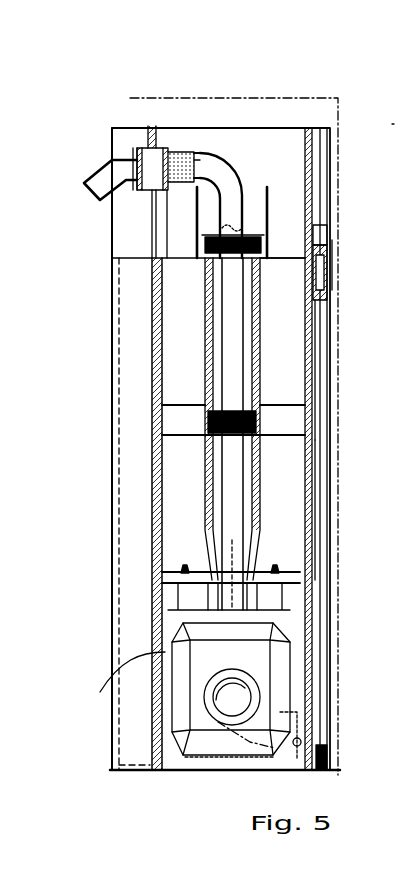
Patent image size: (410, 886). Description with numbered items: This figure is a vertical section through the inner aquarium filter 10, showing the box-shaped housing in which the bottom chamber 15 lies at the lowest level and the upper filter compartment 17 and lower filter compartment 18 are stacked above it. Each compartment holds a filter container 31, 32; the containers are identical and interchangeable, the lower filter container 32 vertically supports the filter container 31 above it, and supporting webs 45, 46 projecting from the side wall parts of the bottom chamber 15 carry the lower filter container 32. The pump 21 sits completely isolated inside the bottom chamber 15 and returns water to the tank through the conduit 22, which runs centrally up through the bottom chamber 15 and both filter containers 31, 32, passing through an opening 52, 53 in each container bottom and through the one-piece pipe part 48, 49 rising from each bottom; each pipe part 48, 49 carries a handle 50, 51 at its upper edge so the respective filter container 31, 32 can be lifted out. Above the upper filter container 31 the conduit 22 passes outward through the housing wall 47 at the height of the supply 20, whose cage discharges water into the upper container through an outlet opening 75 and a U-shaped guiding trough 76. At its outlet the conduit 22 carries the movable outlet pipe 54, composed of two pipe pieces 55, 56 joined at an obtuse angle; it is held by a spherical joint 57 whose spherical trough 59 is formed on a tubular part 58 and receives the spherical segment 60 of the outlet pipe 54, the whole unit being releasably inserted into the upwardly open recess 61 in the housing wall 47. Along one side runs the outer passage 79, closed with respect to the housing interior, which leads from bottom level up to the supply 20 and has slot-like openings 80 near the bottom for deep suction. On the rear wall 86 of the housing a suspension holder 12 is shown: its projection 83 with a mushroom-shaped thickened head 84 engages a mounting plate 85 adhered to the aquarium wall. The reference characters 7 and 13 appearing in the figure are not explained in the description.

The apparatus 7 is at (400, 128).
The filter 10 is at (322, 112).
The suspending holder 12 is at (340, 263).
The guide rail 13 is at (330, 360).
The bottom chamber 15 is at (290, 603).
The upper filter compartment 17 is at (297, 250).
The lower filter compartment 18 is at (296, 430).
The supply 20 is at (250, 150).
The pump 21 is at (200, 728).
The conduit 22 is at (237, 157).
The filter container 31 is at (318, 330).
The filter container 32 is at (318, 521).
The supporting web 45 is at (121, 680).
The supporting web 46 is at (305, 672).
The housing wall 47 is at (157, 237).
The pipe part 48 is at (261, 350).
The pipe part 49 is at (256, 503).
The handle 50 is at (197, 260).
The handle 51 is at (257, 418).
The opening 52 is at (300, 402).
The opening 53 is at (300, 566).
The movable outlet pipe 54 is at (133, 155).
The pipe piece 55 is at (98, 238).
The pipe piece 56 is at (88, 182).
The spherical joint 57 is at (172, 150).
The tubular part 58 is at (170, 190).
The spherical trough 59 is at (180, 158).
The spherical segment 60 is at (152, 150).
The recess 61 is at (150, 255).
The outlet opening 75 is at (268, 197).
The guiding trough 76 is at (214, 210).
The outer passage 79 is at (130, 470).
The openings 80 is at (132, 700).
The projection 83 is at (246, 262).
The thickened head 84 is at (326, 275).
The mounting plate 85 is at (327, 235).
The rear wall 86 is at (316, 458).